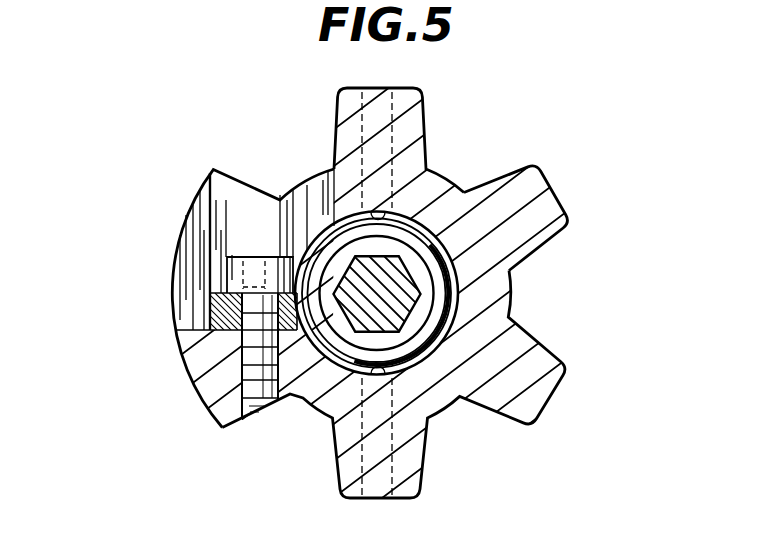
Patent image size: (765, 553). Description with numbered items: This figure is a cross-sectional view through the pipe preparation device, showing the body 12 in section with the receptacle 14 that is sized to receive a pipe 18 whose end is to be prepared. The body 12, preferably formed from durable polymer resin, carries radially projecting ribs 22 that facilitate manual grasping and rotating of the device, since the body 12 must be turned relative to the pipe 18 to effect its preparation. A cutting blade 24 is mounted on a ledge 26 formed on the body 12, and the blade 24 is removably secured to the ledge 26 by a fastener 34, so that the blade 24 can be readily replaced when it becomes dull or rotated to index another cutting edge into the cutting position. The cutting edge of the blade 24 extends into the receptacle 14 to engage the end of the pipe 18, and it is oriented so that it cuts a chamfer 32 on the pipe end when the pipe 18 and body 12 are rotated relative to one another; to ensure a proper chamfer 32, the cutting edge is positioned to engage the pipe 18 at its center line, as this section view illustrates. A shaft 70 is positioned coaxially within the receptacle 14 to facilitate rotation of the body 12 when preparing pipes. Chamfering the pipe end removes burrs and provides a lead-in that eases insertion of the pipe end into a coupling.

The body 12 is at (327, 403).
The receptacle 14 is at (345, 334).
The pipe 18 is at (407, 352).
The radially projecting ribs 22 is at (543, 195).
The cutting blade 24 is at (218, 297).
The ledge 26 is at (178, 322).
The chamfer 32 is at (447, 267).
The fastener 34 is at (252, 268).
The shaft 70 is at (398, 297).